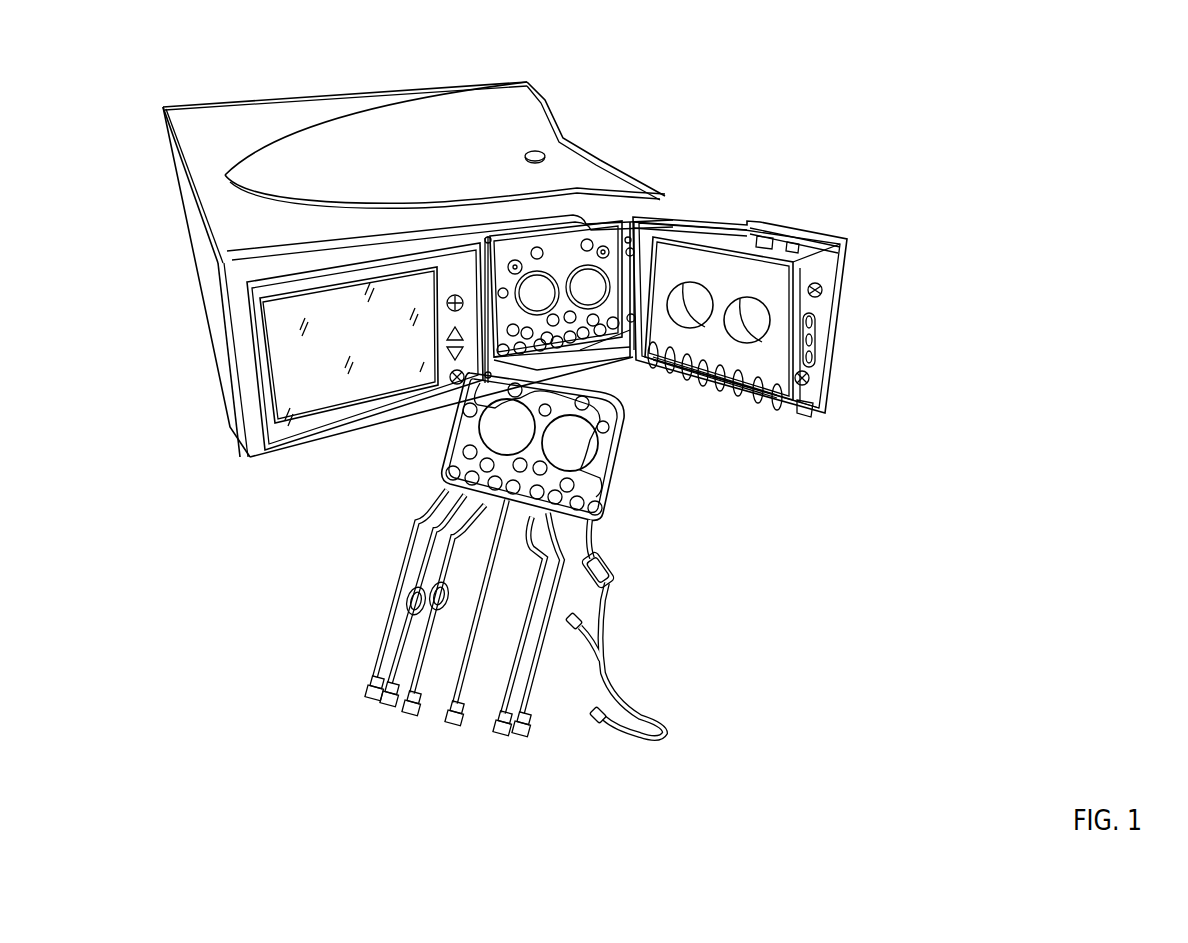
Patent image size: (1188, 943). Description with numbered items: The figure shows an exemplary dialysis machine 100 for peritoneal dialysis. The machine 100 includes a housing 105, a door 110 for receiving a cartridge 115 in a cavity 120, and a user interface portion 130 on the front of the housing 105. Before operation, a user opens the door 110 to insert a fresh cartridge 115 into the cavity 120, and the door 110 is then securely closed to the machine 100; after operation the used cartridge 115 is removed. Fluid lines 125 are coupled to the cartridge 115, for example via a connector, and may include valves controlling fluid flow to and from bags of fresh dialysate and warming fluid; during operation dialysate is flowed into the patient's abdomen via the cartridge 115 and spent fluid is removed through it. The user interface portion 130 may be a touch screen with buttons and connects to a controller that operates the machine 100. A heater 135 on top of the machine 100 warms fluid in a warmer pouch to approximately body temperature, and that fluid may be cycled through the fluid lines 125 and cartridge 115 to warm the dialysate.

The dialysis machine 100 is at (637, 73).
The housing 105 is at (233, 88).
The door 110 is at (808, 450).
The cartridge 115 is at (623, 467).
The cavity 120 is at (603, 342).
The fluid lines 125 is at (353, 618).
The user interface portion 130 is at (313, 467).
The heater 135 is at (536, 150).